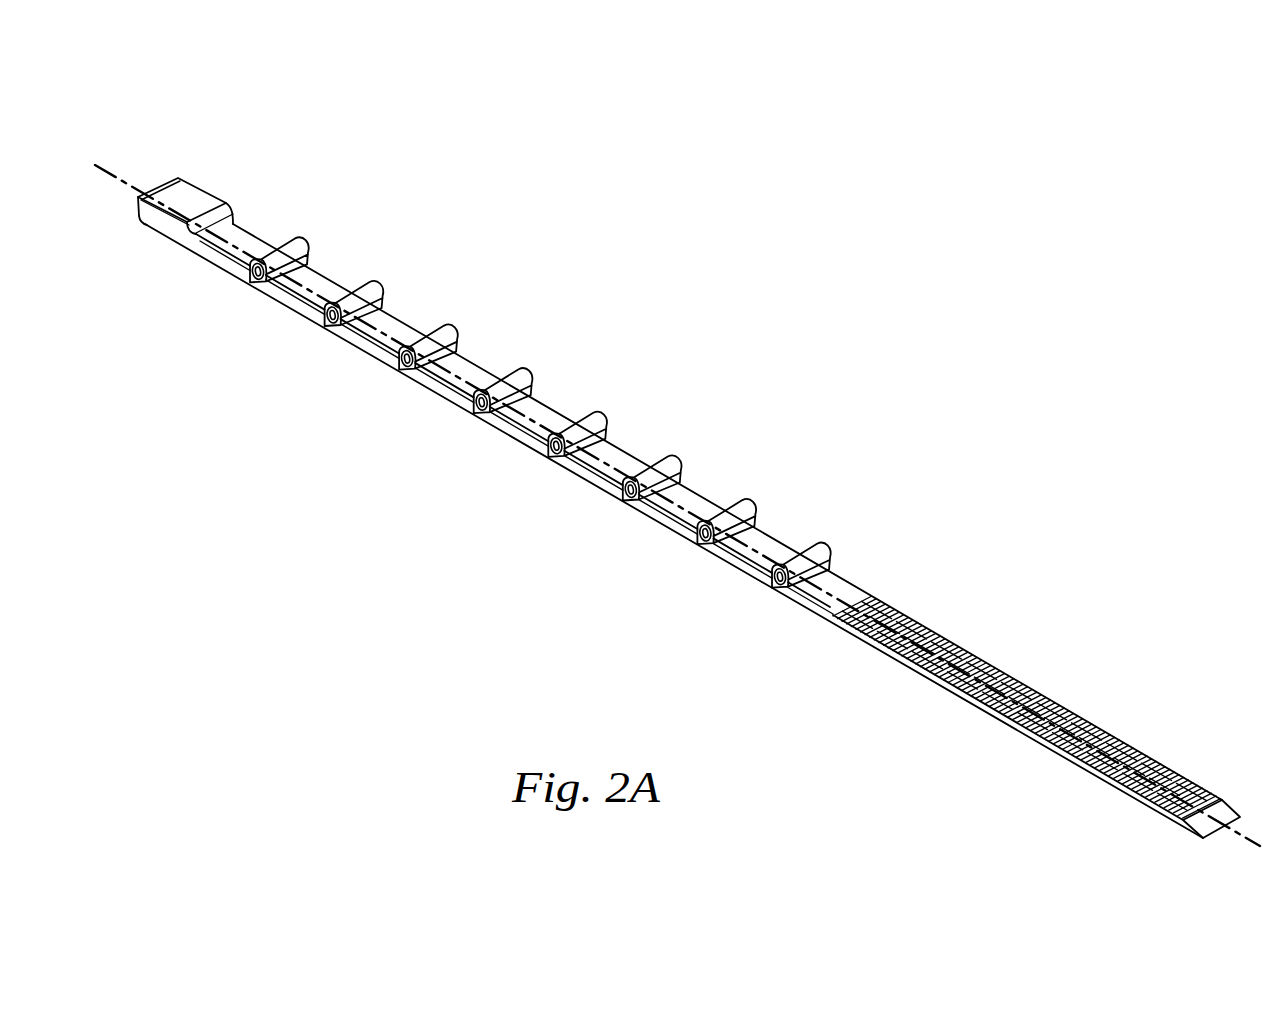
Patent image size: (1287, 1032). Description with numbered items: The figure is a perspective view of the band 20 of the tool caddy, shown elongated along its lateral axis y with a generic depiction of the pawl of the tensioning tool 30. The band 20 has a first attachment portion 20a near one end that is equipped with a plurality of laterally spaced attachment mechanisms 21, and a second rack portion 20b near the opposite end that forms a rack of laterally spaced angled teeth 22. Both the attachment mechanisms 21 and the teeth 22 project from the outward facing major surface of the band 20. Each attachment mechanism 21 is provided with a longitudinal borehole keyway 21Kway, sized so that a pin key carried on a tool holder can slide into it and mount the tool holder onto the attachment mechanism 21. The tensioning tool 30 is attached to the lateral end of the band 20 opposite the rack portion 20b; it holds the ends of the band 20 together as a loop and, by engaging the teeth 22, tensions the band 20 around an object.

The band 20 is at (470, 257).
The first attachment portion of band 20a is at (596, 486).
The second rack portion of band 20b is at (977, 710).
The attachment mechanism 21 is at (432, 336).
The keyway on attachment mechanism 21Kway is at (772, 592).
The teeth on rack portion of band 22 is at (910, 616).
The tensioning tool 30 is at (184, 197).
The lateral axis of band y is at (118, 177).